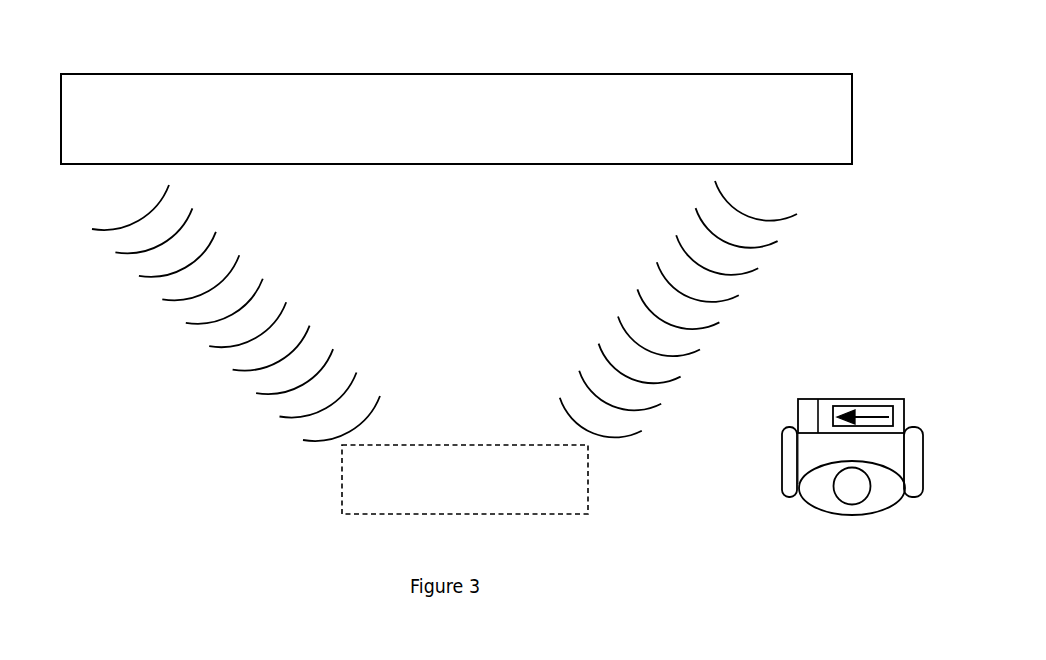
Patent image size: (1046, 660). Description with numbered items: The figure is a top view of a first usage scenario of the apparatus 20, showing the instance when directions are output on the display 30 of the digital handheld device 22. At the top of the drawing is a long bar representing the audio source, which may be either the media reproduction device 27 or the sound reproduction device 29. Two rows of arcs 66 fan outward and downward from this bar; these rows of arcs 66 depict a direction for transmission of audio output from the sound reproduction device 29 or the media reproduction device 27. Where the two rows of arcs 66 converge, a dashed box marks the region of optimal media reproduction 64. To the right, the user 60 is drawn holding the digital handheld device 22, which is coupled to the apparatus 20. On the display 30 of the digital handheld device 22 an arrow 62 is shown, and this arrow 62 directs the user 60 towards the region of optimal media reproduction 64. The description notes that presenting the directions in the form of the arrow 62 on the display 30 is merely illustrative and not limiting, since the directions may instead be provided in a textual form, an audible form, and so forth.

The media reproduction device 27 is at (456, 98).
The sound reproduction device 29 is at (391, 110).
The rows of arcs 66 is at (588, 303).
The region of optimal media reproduction 64 is at (478, 443).
The apparatus 20 is at (813, 410).
The digital handheld device 22 is at (853, 402).
The display 30 is at (874, 372).
The arrow 62 is at (875, 415).
The user 60 is at (818, 497).